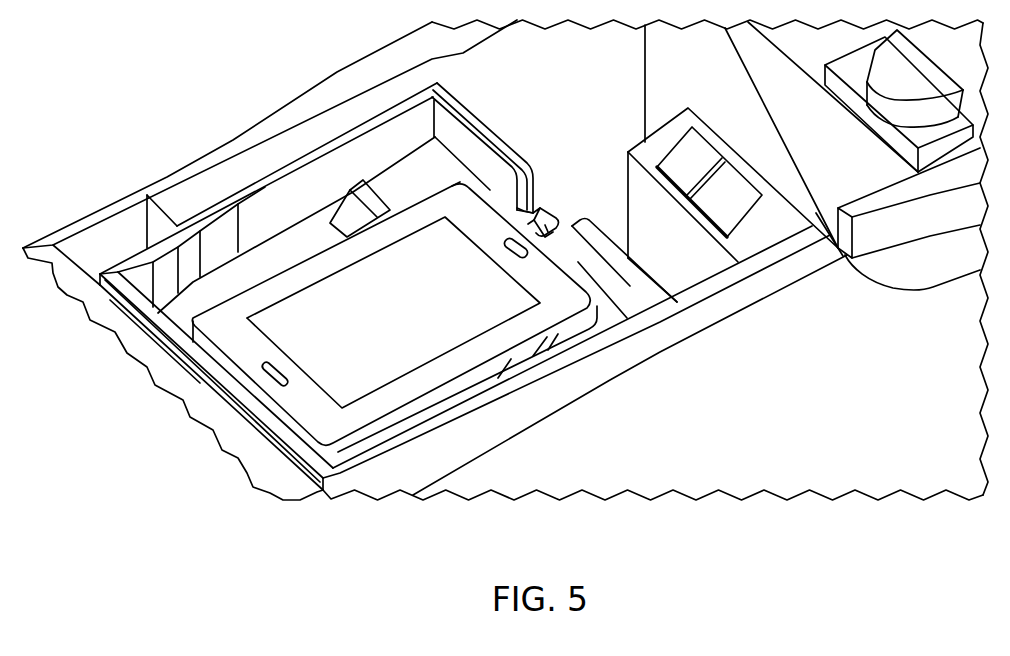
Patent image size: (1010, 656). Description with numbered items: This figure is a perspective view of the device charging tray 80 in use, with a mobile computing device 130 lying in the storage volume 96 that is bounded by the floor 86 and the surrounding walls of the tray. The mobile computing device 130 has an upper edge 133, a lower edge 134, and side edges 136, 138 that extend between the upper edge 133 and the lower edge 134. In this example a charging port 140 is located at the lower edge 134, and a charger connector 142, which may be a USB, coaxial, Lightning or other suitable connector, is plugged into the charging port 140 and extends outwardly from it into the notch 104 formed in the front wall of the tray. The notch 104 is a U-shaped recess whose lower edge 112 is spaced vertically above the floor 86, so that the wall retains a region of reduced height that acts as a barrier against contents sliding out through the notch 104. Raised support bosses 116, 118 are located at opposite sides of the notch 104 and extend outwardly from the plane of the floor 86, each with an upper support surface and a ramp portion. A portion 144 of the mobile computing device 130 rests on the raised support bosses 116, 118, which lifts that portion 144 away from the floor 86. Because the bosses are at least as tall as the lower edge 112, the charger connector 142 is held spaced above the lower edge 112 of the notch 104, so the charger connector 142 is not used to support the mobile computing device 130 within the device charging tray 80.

The device charging tray 80 is at (505, 260).
The storage volume 96 is at (465, 278).
The mobile computing device 130 is at (191, 236).
The raised support boss 116 is at (312, 154).
The lower edge 134 is at (488, 198).
The charging port 140 is at (546, 181).
The lower edge 112 is at (563, 211).
The charger connector 142 is at (540, 254).
The side edge 136 is at (290, 267).
The portion 144 is at (429, 205).
The side edge 138 is at (465, 377).
The notch 104 is at (594, 212).
The raised support boss 118 is at (792, 262).
The floor 86 is at (173, 318).
The upper edge 133 is at (273, 420).